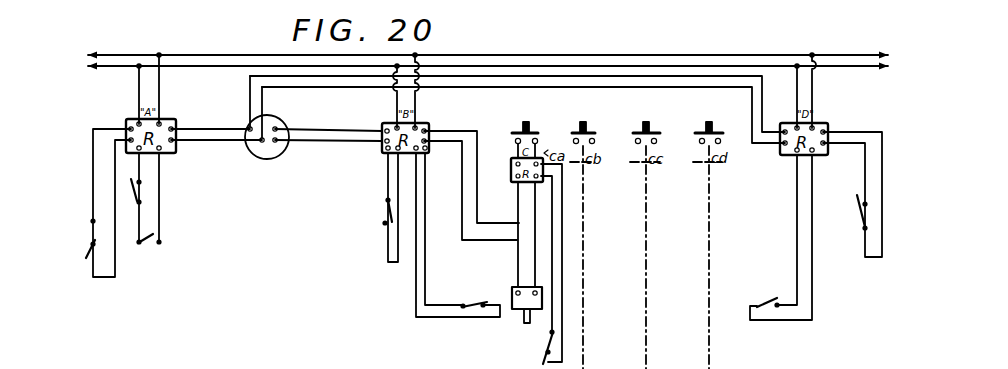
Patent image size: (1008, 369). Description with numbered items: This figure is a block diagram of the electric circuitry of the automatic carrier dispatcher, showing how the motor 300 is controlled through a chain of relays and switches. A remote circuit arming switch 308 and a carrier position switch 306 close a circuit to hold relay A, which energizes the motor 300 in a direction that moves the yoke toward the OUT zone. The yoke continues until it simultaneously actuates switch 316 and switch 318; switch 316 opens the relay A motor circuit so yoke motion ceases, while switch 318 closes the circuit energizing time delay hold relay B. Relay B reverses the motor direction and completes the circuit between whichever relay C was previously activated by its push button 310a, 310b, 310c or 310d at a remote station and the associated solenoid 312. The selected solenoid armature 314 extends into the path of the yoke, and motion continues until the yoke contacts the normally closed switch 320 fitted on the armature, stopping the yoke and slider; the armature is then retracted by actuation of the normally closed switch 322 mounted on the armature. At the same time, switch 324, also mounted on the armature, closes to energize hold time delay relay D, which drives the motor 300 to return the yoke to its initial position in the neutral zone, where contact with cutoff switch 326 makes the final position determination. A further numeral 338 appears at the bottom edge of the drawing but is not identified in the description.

The motor 300 is at (284, 158).
The carrier position switch 306 is at (152, 250).
The remote circuit arming switch 308 is at (145, 195).
The push button 310a is at (543, 115).
The push button 310b is at (598, 115).
The push button 310c is at (661, 114).
The push button 310d is at (725, 114).
The solenoid 312 is at (512, 287).
The solenoid armature 314 is at (525, 323).
The switch 316 is at (86, 256).
The switch 318 is at (384, 209).
The normally closed switch 320 is at (469, 301).
The normally closed switch 322 is at (544, 350).
The switch 324 is at (768, 299).
The cutoff switch 326 is at (862, 218).
The switch 338 is at (257, 368).